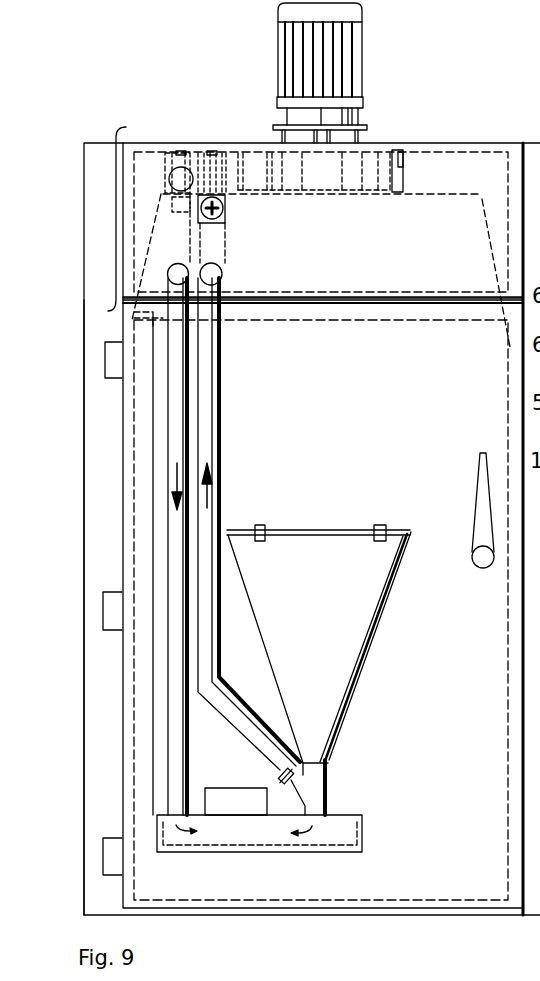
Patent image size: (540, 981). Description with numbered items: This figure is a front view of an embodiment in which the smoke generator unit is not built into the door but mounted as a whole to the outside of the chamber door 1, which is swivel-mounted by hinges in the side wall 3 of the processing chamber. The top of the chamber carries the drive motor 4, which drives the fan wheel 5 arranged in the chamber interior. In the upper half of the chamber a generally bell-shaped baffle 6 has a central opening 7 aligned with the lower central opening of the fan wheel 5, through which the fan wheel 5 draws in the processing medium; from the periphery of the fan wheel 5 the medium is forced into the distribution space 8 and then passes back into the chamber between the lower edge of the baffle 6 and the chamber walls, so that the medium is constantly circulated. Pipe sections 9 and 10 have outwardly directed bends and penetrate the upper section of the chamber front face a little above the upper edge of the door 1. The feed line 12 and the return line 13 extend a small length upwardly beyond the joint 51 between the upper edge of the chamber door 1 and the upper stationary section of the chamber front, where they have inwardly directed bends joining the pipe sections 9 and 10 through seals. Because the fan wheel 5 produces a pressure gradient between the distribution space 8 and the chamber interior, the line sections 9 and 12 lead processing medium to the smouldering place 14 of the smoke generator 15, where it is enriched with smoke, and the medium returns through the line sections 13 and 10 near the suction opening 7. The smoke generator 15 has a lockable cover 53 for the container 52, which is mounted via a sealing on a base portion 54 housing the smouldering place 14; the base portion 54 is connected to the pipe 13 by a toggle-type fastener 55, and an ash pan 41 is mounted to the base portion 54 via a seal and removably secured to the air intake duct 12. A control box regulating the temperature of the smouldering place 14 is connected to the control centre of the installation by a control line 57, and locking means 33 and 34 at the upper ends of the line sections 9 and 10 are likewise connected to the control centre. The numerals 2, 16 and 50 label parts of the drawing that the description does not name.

The chamber door 1 is at (346, 395).
The mounting brackets 2 is at (113, 365).
The side wall 3 is at (111, 452).
The drive motor 4 is at (348, 42).
The fan wheel 5 is at (387, 153).
The baffle 6 is at (483, 205).
The opening 7 is at (360, 197).
The distribution space 8 is at (487, 163).
The pipe section 9 is at (175, 237).
The pipe section 10 is at (213, 230).
The feed line 12 is at (177, 372).
The return line 13 is at (210, 420).
The smouldering place 14 is at (328, 797).
The smoke generator 15 is at (366, 680).
The hopper interior 16 is at (328, 585).
The locking means 33 is at (179, 152).
The locking means 34 is at (210, 192).
The ash pan 41 is at (168, 830).
The upper housing 50 is at (308, 277).
The joint 51 is at (394, 302).
The container 52 is at (357, 630).
The lockable cover 53 is at (323, 531).
The base portion 54 is at (315, 775).
The toggle-type fastener 55 is at (282, 779).
The control line 57 is at (148, 702).